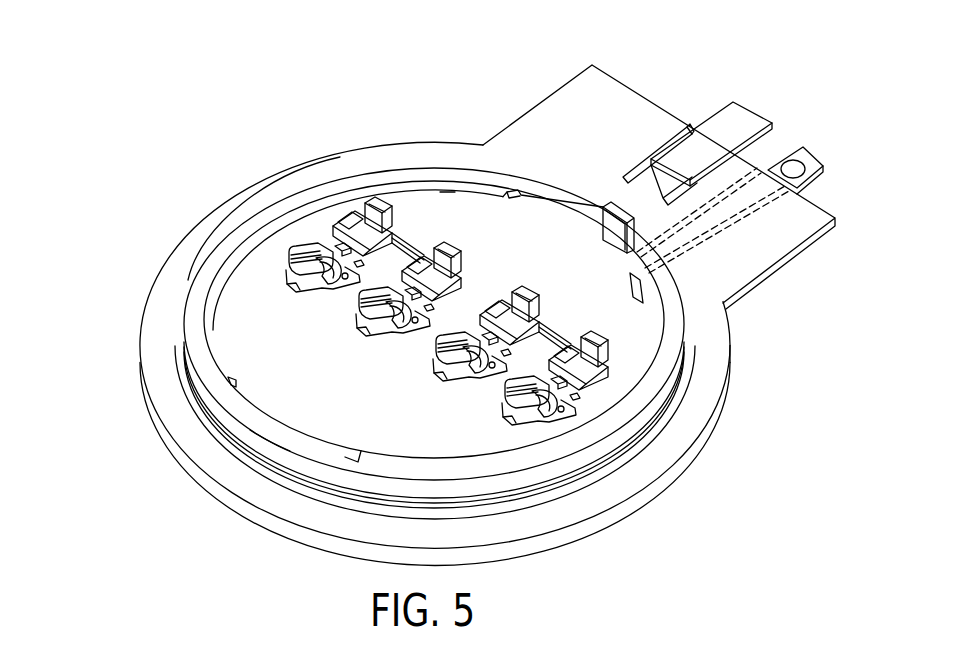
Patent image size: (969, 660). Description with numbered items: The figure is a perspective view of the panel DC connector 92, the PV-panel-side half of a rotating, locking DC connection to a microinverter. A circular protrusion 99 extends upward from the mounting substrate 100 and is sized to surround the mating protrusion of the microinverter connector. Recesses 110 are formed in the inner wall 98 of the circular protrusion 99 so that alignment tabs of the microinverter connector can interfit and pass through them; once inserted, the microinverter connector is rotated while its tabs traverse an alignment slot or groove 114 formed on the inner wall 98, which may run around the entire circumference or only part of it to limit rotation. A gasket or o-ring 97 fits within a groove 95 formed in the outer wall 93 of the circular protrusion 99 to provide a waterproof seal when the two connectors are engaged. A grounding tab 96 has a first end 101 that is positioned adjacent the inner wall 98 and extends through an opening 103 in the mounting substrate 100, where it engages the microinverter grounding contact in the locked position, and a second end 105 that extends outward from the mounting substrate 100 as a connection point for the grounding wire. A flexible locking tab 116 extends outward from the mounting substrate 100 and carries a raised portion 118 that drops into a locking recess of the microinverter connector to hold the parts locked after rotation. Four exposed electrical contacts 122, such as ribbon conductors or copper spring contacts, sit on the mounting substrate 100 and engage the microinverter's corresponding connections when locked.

The panel DC connector 92 is at (201, 95).
The outer wall 93 is at (270, 447).
The groove 95 is at (312, 494).
The grounding tab 96 is at (616, 238).
The gasket or o-ring 97 is at (527, 498).
The inner wall 98 is at (565, 198).
The circular protrusion 99 is at (256, 216).
The mounting substrate 100 is at (266, 326).
The first end 101 is at (603, 212).
The opening 103 is at (610, 263).
The second end 105 is at (811, 156).
The recesses 110 is at (298, 418).
The alignment slot or groove 114 is at (447, 193).
The flexible locking tab 116 is at (734, 118).
The raised portion 118 is at (683, 155).
The electrical contacts 122 is at (373, 323).